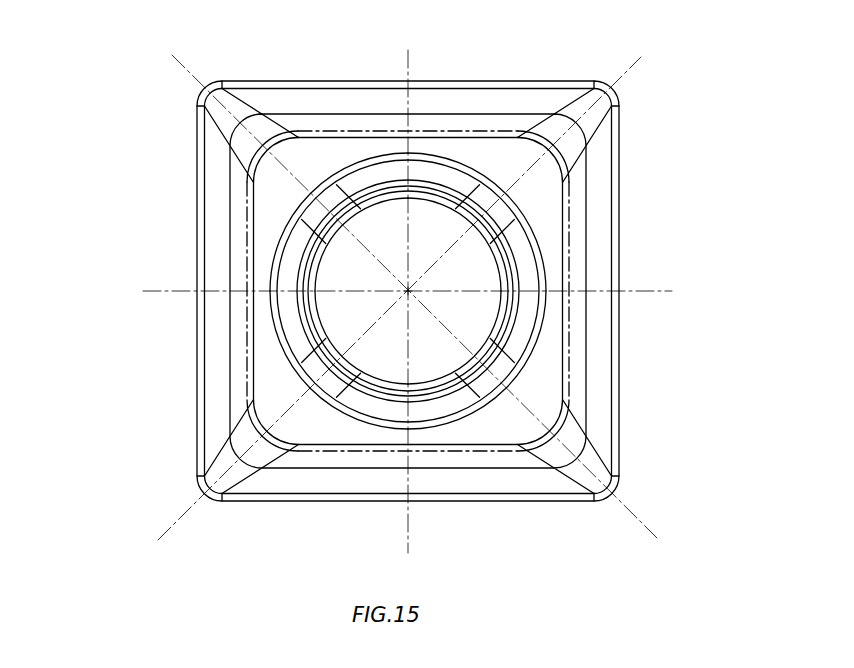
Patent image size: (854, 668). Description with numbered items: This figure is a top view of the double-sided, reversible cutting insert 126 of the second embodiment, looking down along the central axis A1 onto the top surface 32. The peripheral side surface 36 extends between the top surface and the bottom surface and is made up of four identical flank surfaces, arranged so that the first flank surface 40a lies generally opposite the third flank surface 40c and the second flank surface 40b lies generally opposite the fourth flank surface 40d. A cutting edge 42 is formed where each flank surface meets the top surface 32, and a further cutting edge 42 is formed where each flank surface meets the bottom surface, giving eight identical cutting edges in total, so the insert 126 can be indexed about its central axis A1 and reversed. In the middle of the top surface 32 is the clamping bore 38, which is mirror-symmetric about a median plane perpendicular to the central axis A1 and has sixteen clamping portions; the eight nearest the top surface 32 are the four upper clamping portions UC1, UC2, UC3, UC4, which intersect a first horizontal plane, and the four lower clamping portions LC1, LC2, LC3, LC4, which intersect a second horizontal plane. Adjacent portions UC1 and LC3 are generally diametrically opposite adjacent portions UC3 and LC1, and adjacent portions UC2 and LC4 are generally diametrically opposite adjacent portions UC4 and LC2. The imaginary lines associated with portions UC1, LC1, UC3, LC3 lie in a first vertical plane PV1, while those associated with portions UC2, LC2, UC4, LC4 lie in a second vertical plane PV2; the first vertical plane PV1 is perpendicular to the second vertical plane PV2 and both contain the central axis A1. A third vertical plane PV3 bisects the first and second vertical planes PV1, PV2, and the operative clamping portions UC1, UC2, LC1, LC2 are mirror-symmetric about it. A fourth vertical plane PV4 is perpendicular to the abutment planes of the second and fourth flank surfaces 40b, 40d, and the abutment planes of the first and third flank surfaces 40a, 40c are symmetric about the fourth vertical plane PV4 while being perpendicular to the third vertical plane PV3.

The cutting insert 126 is at (120, 271).
The top surface 32 is at (534, 201).
The peripheral side surface 36 is at (198, 363).
The clamping bore 38 is at (346, 274).
The first flank surface 40a is at (197, 304).
The second flank surface 40b is at (270, 80).
The third flank surface 40c is at (622, 152).
The fourth flank surface 40d is at (458, 502).
The cutting edge 42 is at (330, 80).
The central axis A1 is at (422, 270).
The first vertical plane PV1 is at (610, 88).
The second vertical plane PV2 is at (216, 90).
The third vertical plane PV3 is at (431, 293).
The fourth vertical plane PV4 is at (408, 288).
The first upper clamping portion UC1 is at (488, 207).
The second upper clamping portion UC2 is at (495, 367).
The third upper clamping portion UC3 is at (332, 377).
The fourth upper clamping portion UC4 is at (320, 212).
The first lower clamping portion LC1 is at (335, 358).
The second lower clamping portion LC2 is at (337, 223).
The third lower clamping portion LC3 is at (478, 222).
The fourth lower clamping portion LC4 is at (473, 359).